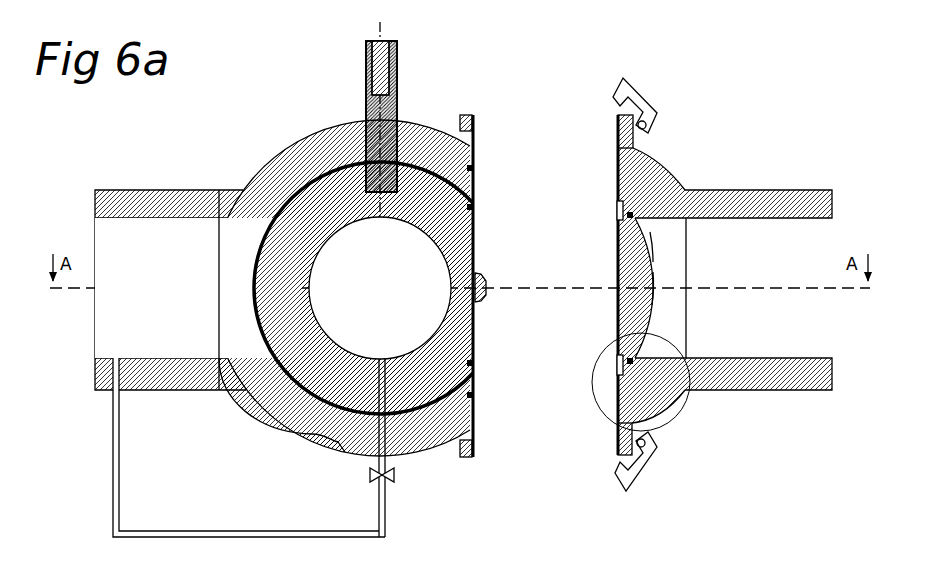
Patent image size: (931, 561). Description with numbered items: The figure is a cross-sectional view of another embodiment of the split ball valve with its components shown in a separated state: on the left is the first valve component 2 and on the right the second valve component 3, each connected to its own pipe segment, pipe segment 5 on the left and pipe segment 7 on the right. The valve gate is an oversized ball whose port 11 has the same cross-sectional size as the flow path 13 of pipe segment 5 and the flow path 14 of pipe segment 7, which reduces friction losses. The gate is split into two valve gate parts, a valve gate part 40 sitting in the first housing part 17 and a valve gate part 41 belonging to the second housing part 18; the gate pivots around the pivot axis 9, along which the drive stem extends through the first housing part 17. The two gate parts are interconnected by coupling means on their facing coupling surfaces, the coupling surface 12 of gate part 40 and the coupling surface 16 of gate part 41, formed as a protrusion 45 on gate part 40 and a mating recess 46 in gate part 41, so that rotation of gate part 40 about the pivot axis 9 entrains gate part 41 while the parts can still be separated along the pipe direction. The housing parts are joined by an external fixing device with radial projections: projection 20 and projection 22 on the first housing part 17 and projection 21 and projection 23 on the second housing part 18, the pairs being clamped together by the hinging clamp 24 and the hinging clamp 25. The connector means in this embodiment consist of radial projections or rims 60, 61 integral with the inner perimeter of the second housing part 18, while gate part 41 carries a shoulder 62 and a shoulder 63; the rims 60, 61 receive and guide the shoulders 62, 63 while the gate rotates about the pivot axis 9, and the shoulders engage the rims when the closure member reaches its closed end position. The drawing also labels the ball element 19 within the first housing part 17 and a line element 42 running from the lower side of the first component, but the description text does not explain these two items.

The first valve component 2 is at (327, 280).
The second valve component 3 is at (700, 294).
The pipe segment 5 is at (108, 393).
The pipe segment 7 is at (763, 378).
The pivot axis 9 is at (383, 25).
The port 11 is at (416, 337).
The coupling surface 12 is at (476, 250).
The flow path 13 is at (110, 345).
The flow path 14 is at (758, 312).
The coupling surface 16 is at (617, 330).
The first housing part 17 is at (412, 140).
The second housing part 18 is at (645, 180).
The ball 19 is at (253, 270).
The radial projection 20 is at (474, 130).
The radial projection 21 is at (620, 122).
The radial projection 22 is at (473, 455).
The radial projection 23 is at (618, 455).
The hinging clamp 24 is at (627, 92).
The hinging clamp 25 is at (645, 468).
The valve gate part 40 is at (272, 425).
The valve gate part 41 is at (625, 247).
The drain channel 42 is at (345, 377).
The protrusion 45 is at (486, 290).
The mating recess 46 is at (630, 287).
The radial projection or rim 60 is at (618, 203).
The radial projection or rim 61 is at (595, 390).
The shoulder 62 is at (633, 217).
The shoulder 63 is at (632, 360).